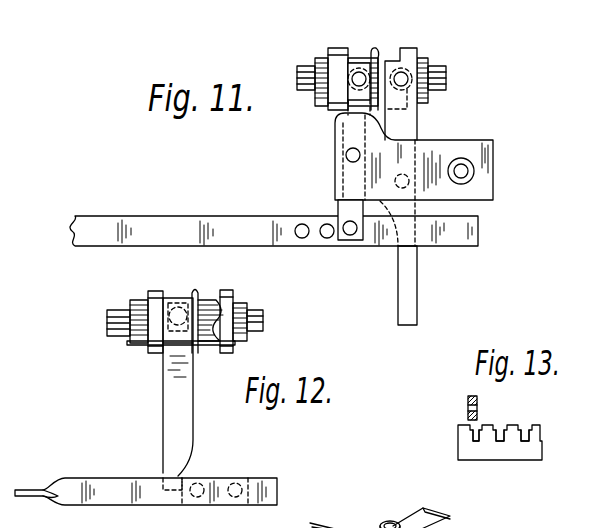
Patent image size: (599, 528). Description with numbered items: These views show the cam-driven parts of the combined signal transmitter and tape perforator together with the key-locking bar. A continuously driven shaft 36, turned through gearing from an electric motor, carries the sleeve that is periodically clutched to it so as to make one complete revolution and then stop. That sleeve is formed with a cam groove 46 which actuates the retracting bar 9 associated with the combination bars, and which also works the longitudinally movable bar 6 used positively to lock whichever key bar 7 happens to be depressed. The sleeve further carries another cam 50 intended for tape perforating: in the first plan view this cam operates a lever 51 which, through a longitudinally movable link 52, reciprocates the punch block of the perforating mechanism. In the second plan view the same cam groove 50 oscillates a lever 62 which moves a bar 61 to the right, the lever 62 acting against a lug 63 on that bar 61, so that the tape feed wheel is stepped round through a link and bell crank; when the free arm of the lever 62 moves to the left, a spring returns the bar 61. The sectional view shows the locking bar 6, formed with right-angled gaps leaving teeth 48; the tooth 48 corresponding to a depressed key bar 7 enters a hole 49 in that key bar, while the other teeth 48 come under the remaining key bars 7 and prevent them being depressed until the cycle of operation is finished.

In FIG. 11, the shaft 36 is at (441, 73).
In FIG. 12, the shaft 36 is at (107, 320).
In FIG. 11, the cam 50 is at (363, 50).
In FIG. 12, the cam 50 is at (167, 296).
In FIG. 11, the cam groove 46 is at (391, 54).
In FIG. 12, the cam groove 46 is at (202, 297).
In FIG. 11, the retracting bar 9 is at (405, 122).
In FIG. 11, the link 52 is at (177, 232).
In FIG. 11, the lever 51 is at (345, 212).
In FIG. 12, the lever 62 is at (172, 392).
In FIG. 12, the bar 61 is at (145, 488).
In FIG. 12, the lug 63 is at (248, 480).
In FIG. 13, the longitudinally movable bar 6 is at (483, 448).
In FIG. 13, the key bar 7 is at (468, 396).
In FIG. 13, the hole 49 is at (485, 420).
In FIG. 13, the teeth 48 is at (505, 420).